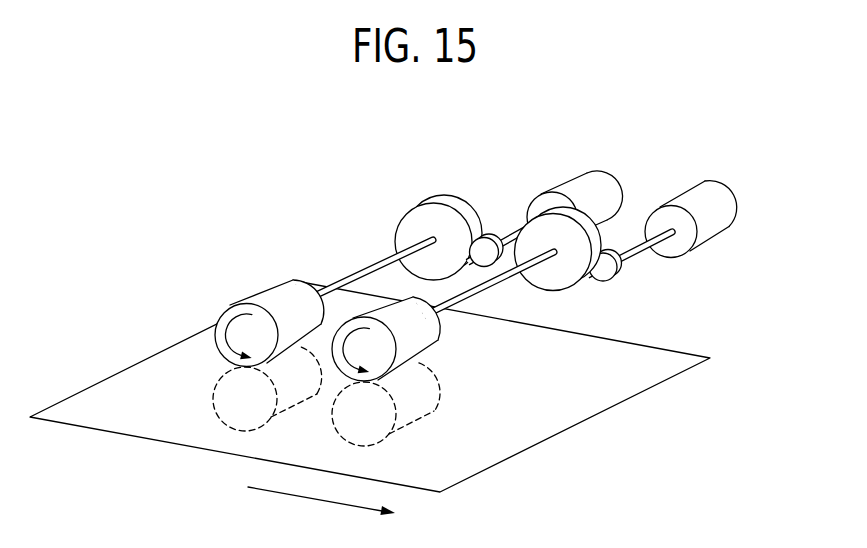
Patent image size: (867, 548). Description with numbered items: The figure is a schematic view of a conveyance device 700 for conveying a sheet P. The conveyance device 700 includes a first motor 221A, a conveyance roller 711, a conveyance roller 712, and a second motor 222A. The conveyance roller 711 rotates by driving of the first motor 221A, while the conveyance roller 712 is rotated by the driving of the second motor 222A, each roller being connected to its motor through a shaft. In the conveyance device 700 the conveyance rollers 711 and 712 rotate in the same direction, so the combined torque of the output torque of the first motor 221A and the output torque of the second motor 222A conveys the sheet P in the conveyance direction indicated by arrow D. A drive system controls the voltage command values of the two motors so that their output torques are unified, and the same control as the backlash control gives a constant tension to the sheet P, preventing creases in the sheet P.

The conveyance device 700 is at (516, 318).
The conveyance roller 711 is at (424, 345).
The conveyance roller 712 is at (271, 298).
The first motor 221A is at (723, 212).
The second motor 222A is at (597, 184).
The sheet P is at (677, 360).
The conveyance direction arrow D is at (321, 507).